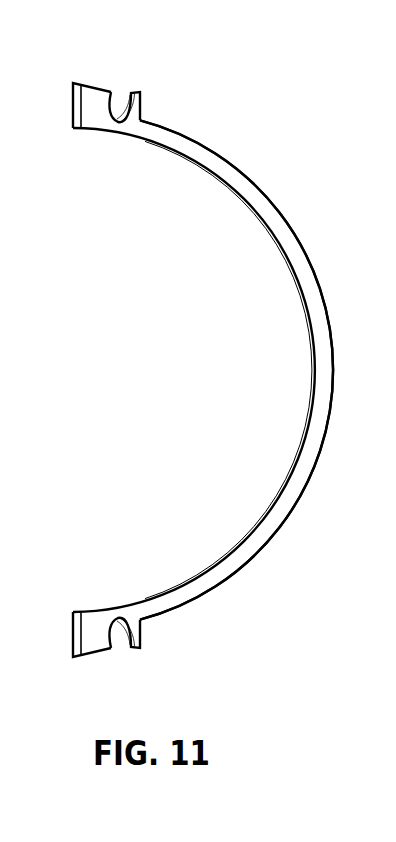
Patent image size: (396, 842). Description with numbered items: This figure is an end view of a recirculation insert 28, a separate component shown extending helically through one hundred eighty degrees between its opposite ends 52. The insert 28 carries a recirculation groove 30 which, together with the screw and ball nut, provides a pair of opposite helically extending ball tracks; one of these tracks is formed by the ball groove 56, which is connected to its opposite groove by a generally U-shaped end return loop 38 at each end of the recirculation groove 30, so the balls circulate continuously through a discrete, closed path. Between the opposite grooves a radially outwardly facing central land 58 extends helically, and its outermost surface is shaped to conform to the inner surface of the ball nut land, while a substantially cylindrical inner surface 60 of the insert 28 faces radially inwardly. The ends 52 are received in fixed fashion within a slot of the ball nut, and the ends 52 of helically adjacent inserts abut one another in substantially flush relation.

The recirculation insert 28 is at (220, 373).
The recirculation groove 30 is at (234, 344).
The end return loop 38 is at (118, 98).
The end 52 is at (94, 128).
The ball groove 56 is at (255, 193).
The central land 58 is at (333, 347).
The inner surface 60 is at (300, 297).